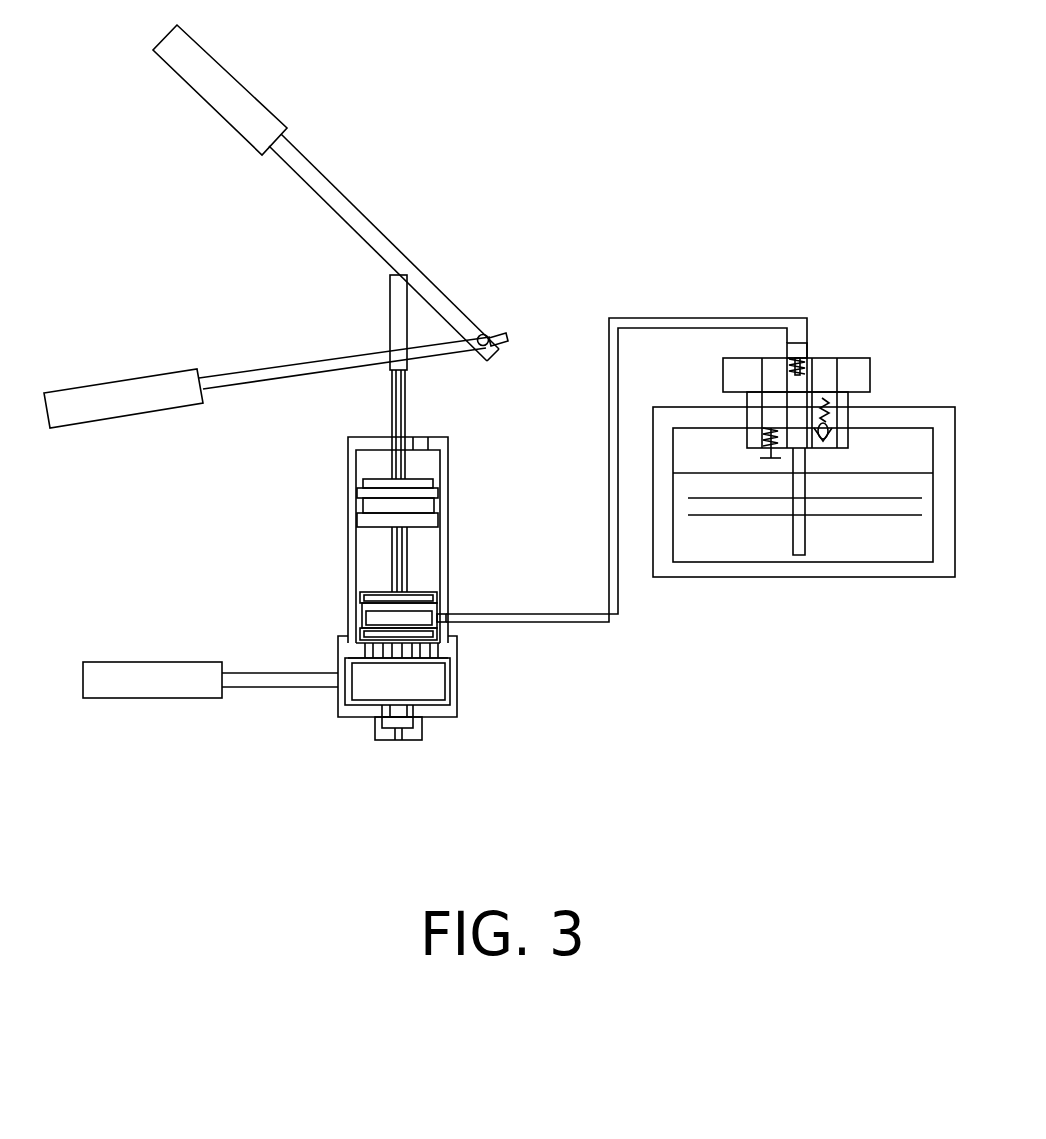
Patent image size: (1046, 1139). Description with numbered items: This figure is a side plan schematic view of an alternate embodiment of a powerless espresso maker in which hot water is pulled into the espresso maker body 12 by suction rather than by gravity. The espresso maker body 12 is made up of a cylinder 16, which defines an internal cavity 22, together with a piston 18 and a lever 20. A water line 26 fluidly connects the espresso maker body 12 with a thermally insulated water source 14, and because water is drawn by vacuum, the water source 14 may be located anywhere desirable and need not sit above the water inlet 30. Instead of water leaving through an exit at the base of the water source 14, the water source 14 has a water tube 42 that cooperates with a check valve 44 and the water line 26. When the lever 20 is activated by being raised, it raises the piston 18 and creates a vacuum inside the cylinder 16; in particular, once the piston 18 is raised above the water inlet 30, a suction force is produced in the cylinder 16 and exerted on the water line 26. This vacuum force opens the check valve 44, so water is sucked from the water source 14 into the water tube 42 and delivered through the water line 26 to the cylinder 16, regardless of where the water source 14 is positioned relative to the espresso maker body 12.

The espresso maker body 12 is at (272, 530).
The thermally insulated water source 14 is at (898, 364).
The cylinder 16 is at (367, 458).
The piston 18 is at (375, 607).
The lever 20 is at (236, 78).
The internal cavity 22 is at (436, 563).
The water line 26 is at (632, 318).
The water inlet 30 is at (445, 622).
The water tube 42 is at (806, 548).
The check valve 44 is at (801, 346).